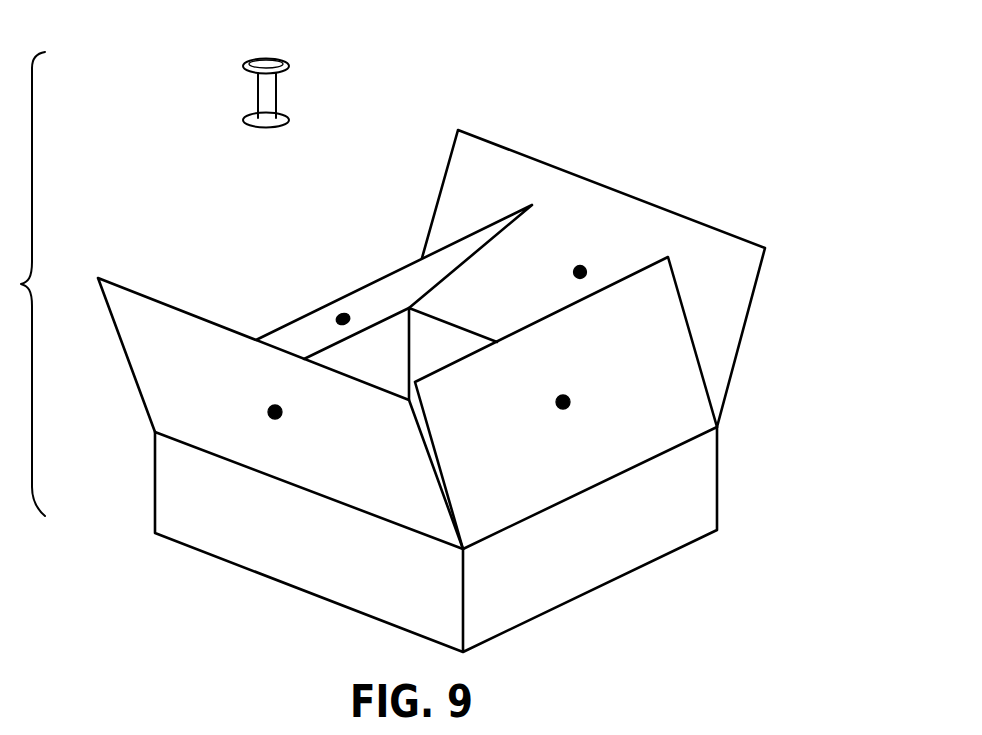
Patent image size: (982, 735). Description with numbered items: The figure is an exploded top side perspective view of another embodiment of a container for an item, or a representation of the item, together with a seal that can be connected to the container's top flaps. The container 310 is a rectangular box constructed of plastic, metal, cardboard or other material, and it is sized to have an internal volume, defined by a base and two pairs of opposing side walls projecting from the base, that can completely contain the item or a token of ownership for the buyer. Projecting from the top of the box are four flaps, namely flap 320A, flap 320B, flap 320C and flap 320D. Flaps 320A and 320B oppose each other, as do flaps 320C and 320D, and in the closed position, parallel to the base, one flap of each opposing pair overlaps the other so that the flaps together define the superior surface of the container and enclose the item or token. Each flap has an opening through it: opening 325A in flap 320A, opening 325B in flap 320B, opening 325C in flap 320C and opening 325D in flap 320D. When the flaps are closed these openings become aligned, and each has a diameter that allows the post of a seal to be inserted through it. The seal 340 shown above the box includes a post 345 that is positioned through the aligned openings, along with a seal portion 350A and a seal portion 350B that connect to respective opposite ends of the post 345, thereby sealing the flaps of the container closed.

The container 310 is at (712, 482).
The flap 320A is at (745, 328).
The flap 320B is at (127, 325).
The flap 320C is at (685, 383).
The flap 320D is at (350, 292).
The opening 325A is at (581, 264).
The opening 325B is at (268, 417).
The opening 325C is at (571, 408).
The opening 325D is at (348, 315).
The seal 340 is at (260, 88).
The post 345 is at (276, 93).
The seal portion 350A is at (278, 58).
The seal portion 350B is at (278, 128).